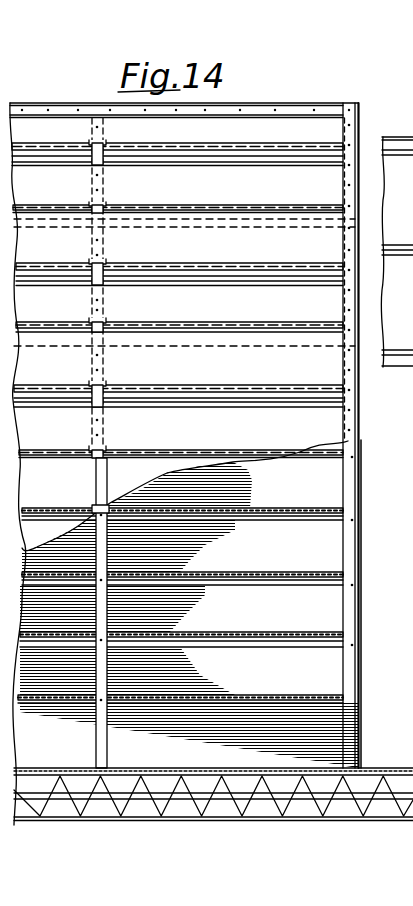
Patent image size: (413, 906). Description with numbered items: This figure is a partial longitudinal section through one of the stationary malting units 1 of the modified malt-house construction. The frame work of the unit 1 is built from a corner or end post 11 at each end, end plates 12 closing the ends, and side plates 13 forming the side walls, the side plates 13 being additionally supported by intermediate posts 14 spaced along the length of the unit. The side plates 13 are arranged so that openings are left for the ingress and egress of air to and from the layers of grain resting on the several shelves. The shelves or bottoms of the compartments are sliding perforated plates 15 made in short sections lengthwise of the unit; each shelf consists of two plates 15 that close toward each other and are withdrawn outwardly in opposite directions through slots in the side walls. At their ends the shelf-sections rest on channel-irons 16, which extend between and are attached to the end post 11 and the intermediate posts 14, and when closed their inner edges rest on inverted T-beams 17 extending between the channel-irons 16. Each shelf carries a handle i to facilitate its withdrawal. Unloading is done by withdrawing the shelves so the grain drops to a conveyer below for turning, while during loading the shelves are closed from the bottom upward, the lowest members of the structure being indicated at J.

The malting unit 1 is at (184, 94).
The corner or end post 11 is at (352, 125).
The end plate 12 is at (358, 462).
The side plate 13 is at (184, 365).
The intermediate post 14 is at (97, 402).
The sliding perforated plate 15 is at (277, 580).
The channel-iron 16 is at (343, 500).
The inverted T-beam 17 is at (225, 672).
The handle i is at (312, 147).
The bottom band J is at (377, 767).